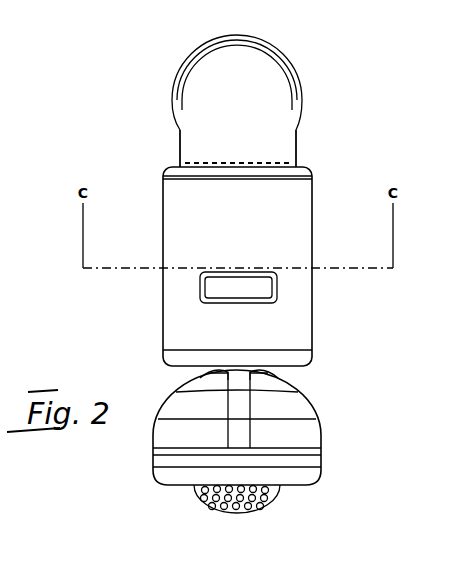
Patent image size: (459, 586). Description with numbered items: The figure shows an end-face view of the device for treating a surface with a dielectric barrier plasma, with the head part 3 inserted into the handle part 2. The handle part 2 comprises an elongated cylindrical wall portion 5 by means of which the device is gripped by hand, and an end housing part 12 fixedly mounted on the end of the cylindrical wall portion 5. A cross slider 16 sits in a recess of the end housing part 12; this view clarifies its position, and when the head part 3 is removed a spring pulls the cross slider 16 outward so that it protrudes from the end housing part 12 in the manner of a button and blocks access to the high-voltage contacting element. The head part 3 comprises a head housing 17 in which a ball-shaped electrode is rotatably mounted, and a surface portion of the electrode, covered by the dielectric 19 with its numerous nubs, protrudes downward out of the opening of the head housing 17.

The handle part 2 is at (303, 130).
The cylindrical wall portion 5 is at (195, 147).
The end housing part 12 is at (318, 190).
The cross slider 16 is at (259, 287).
The head part 3 is at (322, 420).
The head housing 17 is at (153, 435).
The dielectric 19 is at (205, 505).